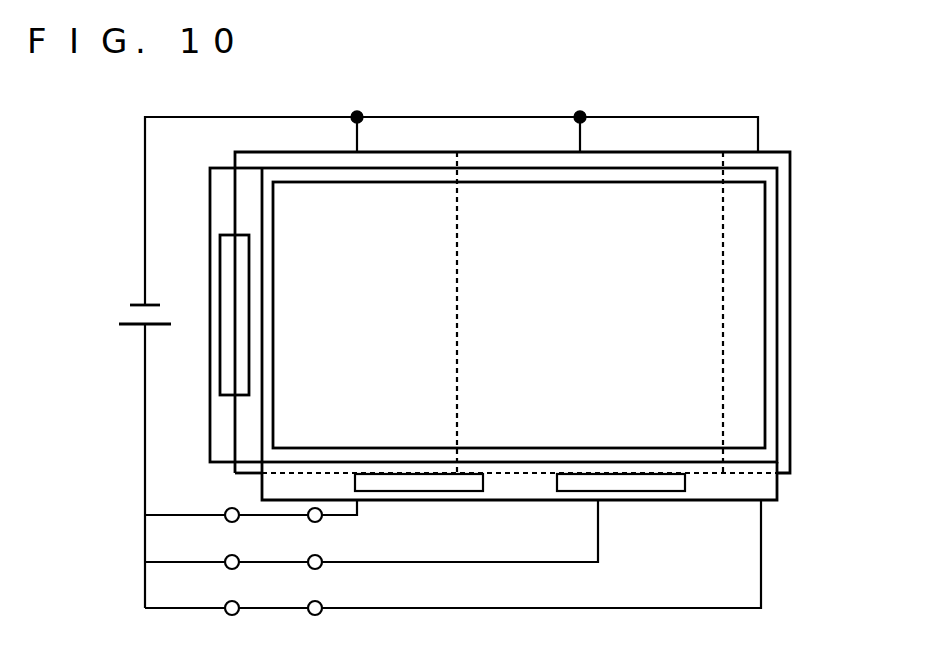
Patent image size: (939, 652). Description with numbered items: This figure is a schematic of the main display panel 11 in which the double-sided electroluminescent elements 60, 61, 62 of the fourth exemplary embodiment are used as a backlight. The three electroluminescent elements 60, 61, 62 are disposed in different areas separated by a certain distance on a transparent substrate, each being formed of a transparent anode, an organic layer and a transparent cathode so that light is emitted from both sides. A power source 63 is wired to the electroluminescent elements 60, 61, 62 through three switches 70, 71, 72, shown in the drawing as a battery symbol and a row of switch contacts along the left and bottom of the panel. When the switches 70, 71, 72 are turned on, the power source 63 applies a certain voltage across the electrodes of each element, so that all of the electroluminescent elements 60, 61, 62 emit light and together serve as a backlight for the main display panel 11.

The main display panel 11 is at (712, 300).
The electroluminescent element 60 is at (748, 208).
The electroluminescent element 61 is at (632, 190).
The electroluminescent element 62 is at (405, 188).
The power source 63 is at (132, 332).
The switch 70 is at (255, 603).
The switch 71 is at (255, 557).
The switch 72 is at (255, 508).